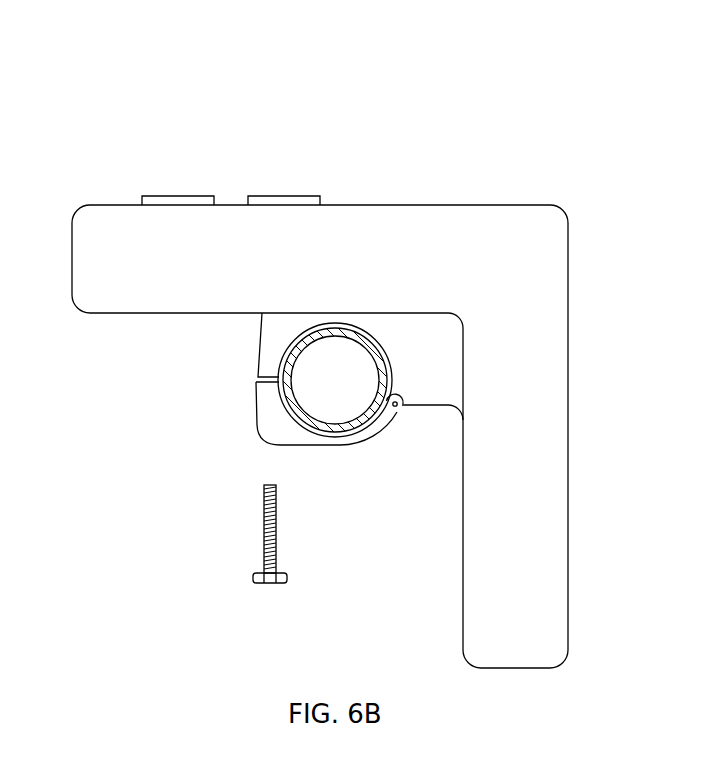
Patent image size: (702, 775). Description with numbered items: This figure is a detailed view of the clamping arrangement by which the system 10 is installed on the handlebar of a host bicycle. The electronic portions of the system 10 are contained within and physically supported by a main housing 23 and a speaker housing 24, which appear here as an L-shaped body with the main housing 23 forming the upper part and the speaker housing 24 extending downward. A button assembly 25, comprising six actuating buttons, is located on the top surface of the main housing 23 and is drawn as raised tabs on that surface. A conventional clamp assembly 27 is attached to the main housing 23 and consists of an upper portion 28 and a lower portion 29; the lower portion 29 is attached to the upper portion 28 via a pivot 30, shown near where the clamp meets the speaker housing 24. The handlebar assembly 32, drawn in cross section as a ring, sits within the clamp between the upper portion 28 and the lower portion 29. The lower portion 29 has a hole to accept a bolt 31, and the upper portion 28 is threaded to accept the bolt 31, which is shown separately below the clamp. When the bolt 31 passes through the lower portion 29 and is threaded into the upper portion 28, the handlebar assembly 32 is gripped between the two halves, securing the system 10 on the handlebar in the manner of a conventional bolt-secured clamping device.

The system 10 is at (428, 163).
The main housing 23 is at (535, 279).
The speaker housing 24 is at (530, 391).
The button assembly 25 is at (212, 162).
The clamp assembly 27 is at (208, 407).
The upper portion 28 is at (267, 353).
The lower portion 29 is at (268, 430).
The pivot 30 is at (400, 410).
The bolt 31 is at (267, 592).
The handlebar assembly 32 is at (348, 391).